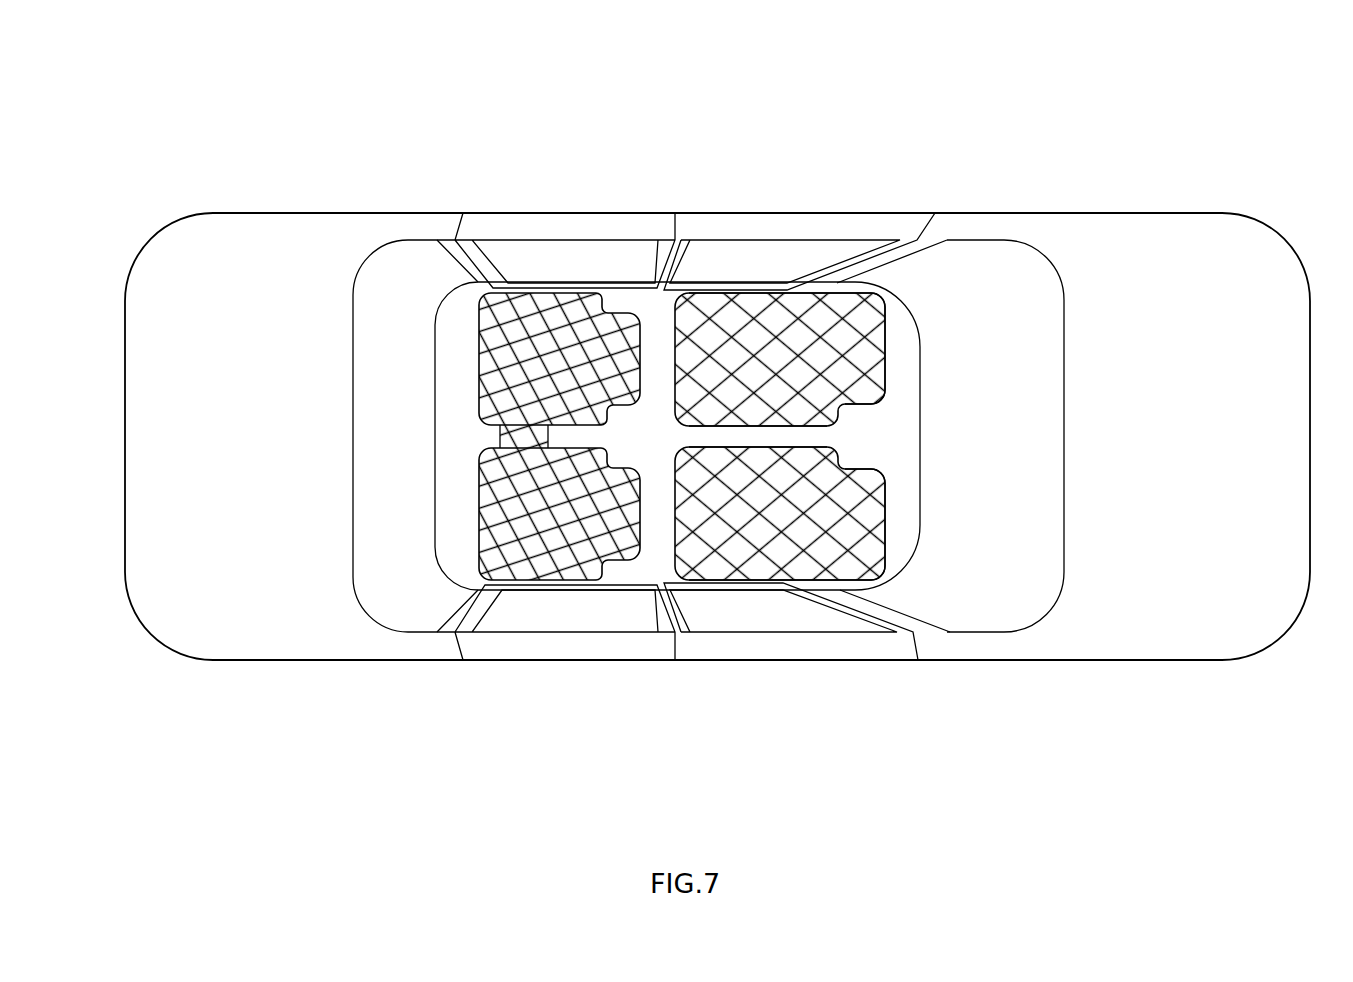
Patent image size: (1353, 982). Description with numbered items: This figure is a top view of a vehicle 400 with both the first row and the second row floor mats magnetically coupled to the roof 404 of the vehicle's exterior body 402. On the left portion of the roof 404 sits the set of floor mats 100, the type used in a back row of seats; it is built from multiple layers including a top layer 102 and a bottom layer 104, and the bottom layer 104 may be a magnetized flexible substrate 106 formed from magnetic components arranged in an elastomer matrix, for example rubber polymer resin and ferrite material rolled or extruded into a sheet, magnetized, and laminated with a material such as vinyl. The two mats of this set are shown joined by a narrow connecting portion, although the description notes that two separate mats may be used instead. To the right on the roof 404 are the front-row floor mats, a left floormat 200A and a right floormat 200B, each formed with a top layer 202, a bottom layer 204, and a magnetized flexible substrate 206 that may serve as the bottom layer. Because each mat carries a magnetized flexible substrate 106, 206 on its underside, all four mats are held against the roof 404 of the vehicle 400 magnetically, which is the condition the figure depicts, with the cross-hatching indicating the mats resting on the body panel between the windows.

The vehicle 400 is at (340, 82).
The vehicle body 402 is at (286, 213).
The roof 404 is at (460, 310).
The set of floor mats 100 is at (627, 312).
The top layer 102 is at (576, 314).
The bottom layer 104 is at (627, 560).
The magnetized flexible substrate 106 is at (512, 293).
The left floormat 200A is at (677, 317).
The right floormat 200B is at (678, 568).
The top layer 202 is at (735, 297).
The bottom layer 204 is at (805, 318).
The magnetized flexible substrate 206 is at (883, 335).